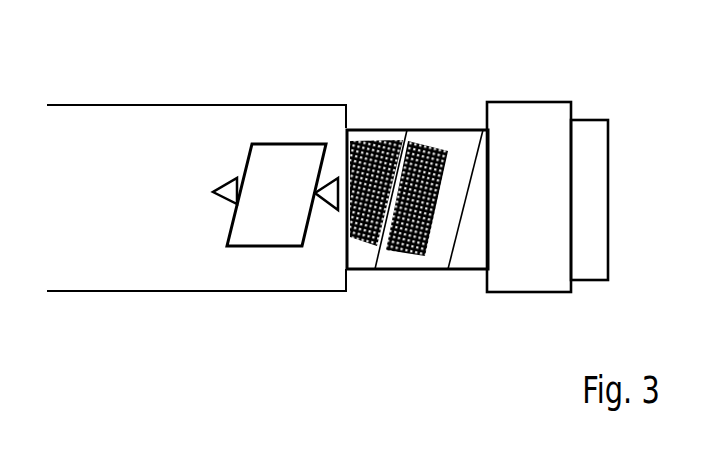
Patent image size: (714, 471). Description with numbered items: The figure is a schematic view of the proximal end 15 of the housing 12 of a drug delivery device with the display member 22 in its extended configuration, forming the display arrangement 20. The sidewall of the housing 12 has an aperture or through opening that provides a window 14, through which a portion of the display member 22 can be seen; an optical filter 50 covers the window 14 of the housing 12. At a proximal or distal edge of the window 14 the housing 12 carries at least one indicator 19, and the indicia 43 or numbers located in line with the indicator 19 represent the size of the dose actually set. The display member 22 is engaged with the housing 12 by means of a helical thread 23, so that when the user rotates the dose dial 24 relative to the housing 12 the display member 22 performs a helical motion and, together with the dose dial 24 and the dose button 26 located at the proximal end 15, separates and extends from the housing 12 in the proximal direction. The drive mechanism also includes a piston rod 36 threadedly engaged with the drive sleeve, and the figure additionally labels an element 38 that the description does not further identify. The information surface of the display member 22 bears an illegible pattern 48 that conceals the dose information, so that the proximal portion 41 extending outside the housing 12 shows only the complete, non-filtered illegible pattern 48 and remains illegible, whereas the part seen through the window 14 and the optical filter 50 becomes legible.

The housing 12 is at (187, 120).
The window 14 is at (284, 147).
The proximal end 15 is at (322, 318).
The indicator 19 is at (226, 178).
The display arrangement 20 is at (357, 100).
The display member 22 is at (427, 137).
The helical thread 23 is at (470, 180).
The dose dial 24 is at (515, 115).
The dose button 26 is at (596, 128).
The piston rod 36 is at (282, 192).
The second filter layer 38 is at (272, 234).
The proximal portion 41 is at (418, 258).
The indicia 43 is at (270, 246).
The illegible pattern 48 is at (386, 140).
The optical filter 50 is at (299, 160).